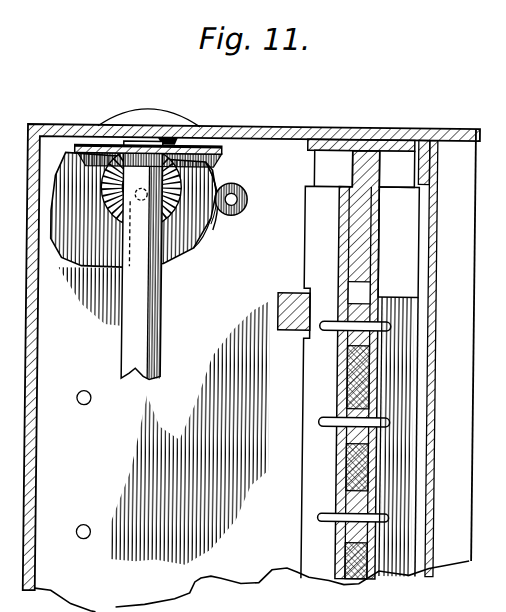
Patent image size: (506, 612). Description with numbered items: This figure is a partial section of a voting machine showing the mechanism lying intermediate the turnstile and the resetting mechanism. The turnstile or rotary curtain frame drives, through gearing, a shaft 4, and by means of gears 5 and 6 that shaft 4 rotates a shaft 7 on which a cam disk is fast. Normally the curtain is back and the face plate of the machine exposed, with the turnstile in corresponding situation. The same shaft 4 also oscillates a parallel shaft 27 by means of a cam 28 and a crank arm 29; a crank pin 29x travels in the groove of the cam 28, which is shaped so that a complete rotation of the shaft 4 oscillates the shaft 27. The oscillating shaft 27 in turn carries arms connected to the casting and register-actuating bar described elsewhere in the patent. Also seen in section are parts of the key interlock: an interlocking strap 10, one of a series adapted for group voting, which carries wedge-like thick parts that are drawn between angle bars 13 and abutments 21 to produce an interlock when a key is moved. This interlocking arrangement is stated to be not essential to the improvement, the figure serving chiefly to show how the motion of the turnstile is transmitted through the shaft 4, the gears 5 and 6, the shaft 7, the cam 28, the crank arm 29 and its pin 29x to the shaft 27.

The shaft 4 is at (168, 138).
The gear 5 is at (213, 146).
The gear 6 is at (104, 143).
The shaft 7 is at (163, 321).
The interlocking strap 10 is at (350, 370).
The angle bars 13 is at (350, 480).
The abutments 21 is at (372, 318).
The shaft 27 is at (242, 197).
The cam 28 is at (86, 192).
The crank arm 29 is at (229, 190).
The crank pin 29x is at (207, 223).